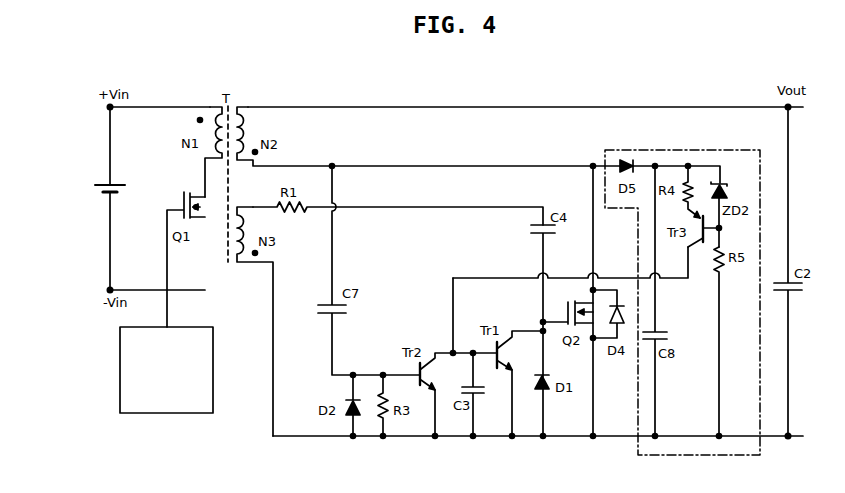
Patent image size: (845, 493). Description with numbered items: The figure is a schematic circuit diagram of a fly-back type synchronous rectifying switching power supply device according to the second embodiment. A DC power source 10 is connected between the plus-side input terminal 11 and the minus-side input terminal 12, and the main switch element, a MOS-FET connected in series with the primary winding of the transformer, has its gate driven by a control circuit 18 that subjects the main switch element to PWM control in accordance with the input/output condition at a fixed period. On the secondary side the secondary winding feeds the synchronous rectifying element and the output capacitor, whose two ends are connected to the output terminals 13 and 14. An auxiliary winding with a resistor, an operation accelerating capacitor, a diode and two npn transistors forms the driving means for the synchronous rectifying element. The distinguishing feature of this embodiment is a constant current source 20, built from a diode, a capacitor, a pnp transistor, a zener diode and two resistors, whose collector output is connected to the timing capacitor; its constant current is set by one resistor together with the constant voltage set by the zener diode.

The DC power source 10 is at (111, 184).
The input terminal 11 is at (108, 110).
The input terminal 12 is at (110, 290).
The output terminal 13 is at (790, 109).
The output terminal 14 is at (790, 433).
The control circuit 18 is at (187, 323).
The constant current source 20 is at (657, 150).